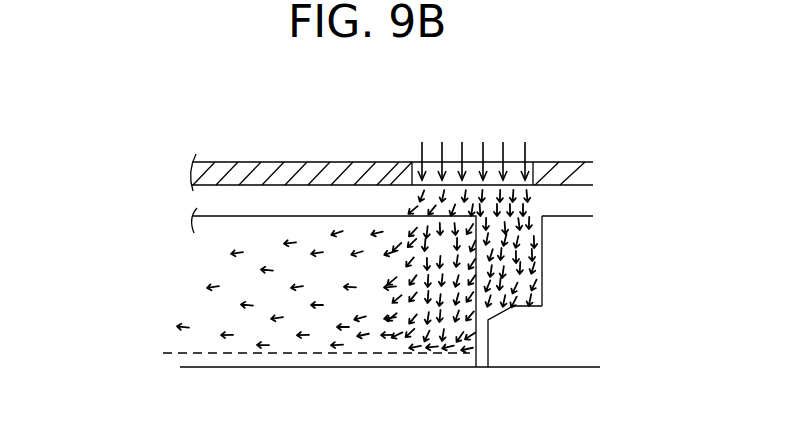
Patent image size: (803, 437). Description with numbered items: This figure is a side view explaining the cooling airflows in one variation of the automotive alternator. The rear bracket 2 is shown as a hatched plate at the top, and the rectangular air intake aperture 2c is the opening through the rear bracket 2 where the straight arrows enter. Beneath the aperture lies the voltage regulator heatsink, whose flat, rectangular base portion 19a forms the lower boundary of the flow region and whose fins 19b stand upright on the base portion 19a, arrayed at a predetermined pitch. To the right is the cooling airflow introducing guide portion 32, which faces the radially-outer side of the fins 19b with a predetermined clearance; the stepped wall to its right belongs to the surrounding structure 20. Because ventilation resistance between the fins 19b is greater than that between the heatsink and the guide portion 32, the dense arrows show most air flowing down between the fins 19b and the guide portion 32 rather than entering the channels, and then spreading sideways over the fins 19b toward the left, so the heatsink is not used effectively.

The rear bracket 2 is at (233, 151).
The air intake aperture 2c is at (412, 165).
The base portion 19a is at (183, 355).
The fins 19b is at (230, 283).
The chamber wall 20 is at (588, 248).
The cooling airflow introducing guide portion 32 is at (537, 287).